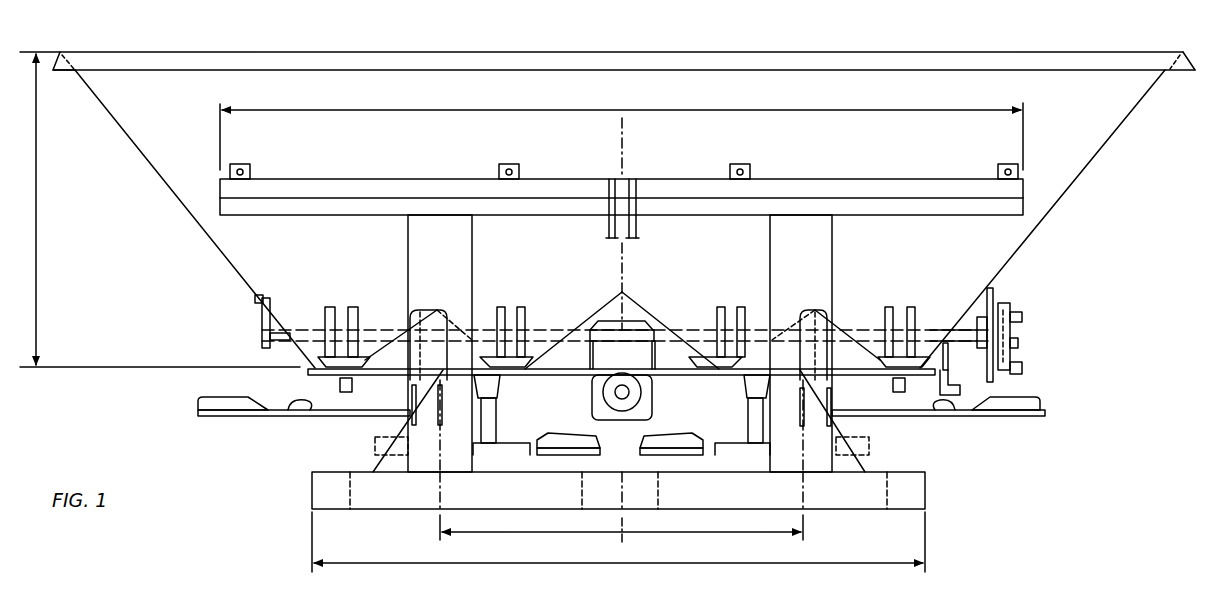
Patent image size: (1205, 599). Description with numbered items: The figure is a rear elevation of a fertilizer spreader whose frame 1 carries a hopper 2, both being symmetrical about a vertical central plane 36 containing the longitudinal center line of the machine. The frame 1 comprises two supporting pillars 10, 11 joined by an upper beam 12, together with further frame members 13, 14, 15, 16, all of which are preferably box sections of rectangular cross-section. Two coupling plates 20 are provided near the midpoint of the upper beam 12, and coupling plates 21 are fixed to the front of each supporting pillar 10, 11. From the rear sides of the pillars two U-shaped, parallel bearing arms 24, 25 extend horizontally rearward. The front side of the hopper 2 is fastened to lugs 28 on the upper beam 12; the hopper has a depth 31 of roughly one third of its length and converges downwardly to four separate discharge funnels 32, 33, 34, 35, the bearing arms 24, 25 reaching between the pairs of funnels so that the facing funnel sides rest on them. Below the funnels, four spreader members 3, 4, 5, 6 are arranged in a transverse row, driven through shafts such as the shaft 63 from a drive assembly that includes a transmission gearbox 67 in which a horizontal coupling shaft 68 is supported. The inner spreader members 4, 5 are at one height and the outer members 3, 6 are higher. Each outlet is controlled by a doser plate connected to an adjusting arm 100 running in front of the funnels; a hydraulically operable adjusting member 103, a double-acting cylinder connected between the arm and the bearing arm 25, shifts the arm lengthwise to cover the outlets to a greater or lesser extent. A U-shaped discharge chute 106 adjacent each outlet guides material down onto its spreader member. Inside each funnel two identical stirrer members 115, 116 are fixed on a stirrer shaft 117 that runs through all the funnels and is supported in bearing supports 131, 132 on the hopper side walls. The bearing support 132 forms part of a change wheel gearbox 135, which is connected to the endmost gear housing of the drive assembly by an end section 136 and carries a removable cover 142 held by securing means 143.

The frame 1 is at (840, 272).
The hopper 2 is at (1100, 140).
The spreader member 3 is at (238, 416).
The spreader member 4 is at (372, 446).
The spreader member 5 is at (866, 450).
The spreader member 6 is at (1022, 418).
The supporting pillar 10 is at (408, 243).
The supporting pillar 11 is at (770, 243).
The upper beam 12 is at (262, 215).
The frame member 13 is at (312, 498).
The frame member 14 is at (621, 536).
The frame member 15 is at (655, 560).
The frame member 16 is at (655, 112).
The coupling plates 20 is at (612, 238).
The coupling plate 21 is at (405, 426).
The bearing arm 24 is at (437, 310).
The bearing arm 25 is at (810, 315).
The lugs 28 is at (251, 170).
The depth 31 is at (38, 245).
The discharge funnel 32 is at (350, 297).
The discharge funnel 33 is at (522, 297).
The discharge funnel 34 is at (742, 297).
The discharge funnel 35 is at (910, 297).
The central plane 36 is at (624, 148).
The shaft 63 is at (500, 406).
The transmission gearbox 67 is at (645, 392).
The coupling shaft 68 is at (626, 396).
The adjusting arm 100 is at (580, 378).
The adjusting member 103 is at (775, 300).
The discharge chute 106 is at (356, 386).
The stirrer member 115 is at (326, 313).
The stirrer member 116 is at (360, 313).
The stirrer shaft 117 is at (362, 322).
The bearing support 131 is at (262, 324).
The bearing support 132 is at (1000, 290).
The change wheel gearbox 135 is at (1010, 302).
The end section 136 is at (952, 370).
The removable cover 142 is at (1018, 344).
The securing means 143 is at (1022, 321).